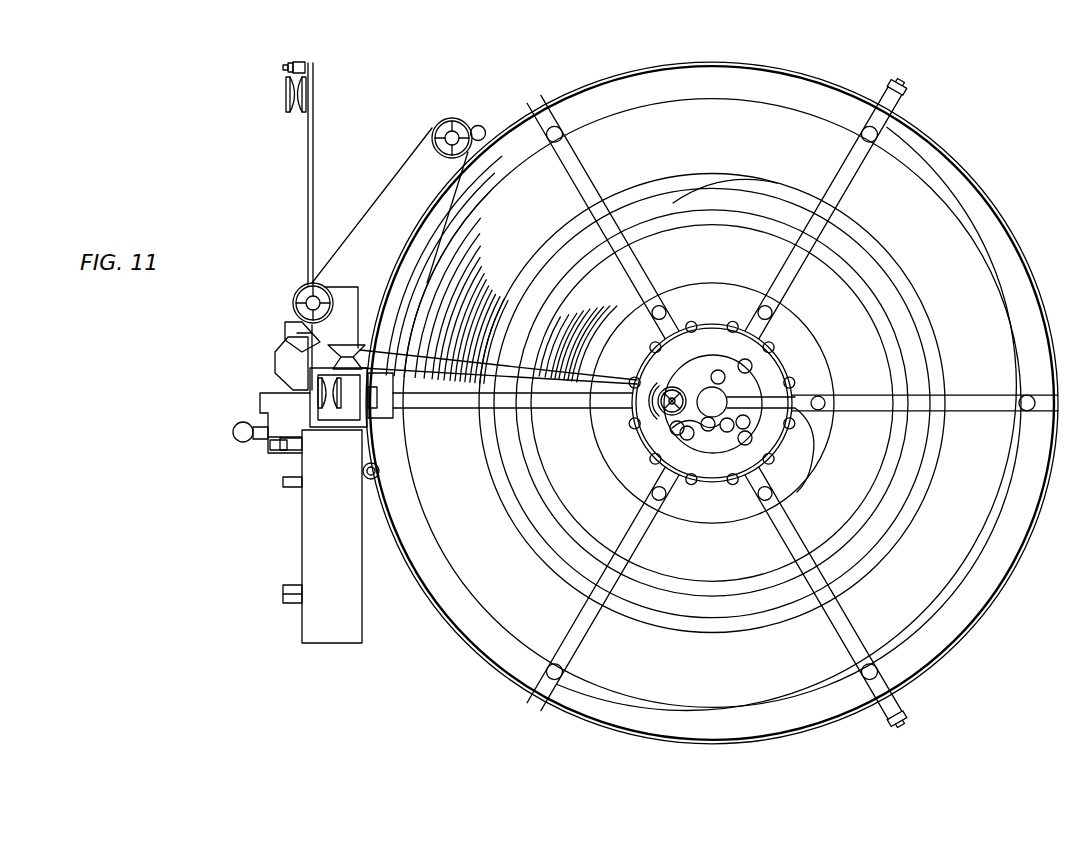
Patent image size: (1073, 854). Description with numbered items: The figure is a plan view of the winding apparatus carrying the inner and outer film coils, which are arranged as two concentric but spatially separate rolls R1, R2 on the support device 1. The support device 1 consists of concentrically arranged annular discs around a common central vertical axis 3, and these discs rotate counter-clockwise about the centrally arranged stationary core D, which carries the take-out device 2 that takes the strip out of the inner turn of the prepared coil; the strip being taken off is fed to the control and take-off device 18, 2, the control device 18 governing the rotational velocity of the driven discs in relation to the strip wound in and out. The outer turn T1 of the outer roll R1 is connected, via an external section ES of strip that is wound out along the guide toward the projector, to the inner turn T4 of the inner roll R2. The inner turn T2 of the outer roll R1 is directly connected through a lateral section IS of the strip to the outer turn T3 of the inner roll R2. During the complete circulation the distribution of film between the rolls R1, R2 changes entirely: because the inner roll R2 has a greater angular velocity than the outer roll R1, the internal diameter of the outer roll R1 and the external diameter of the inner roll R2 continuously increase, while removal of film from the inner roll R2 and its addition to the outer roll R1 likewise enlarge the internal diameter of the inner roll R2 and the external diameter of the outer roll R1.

The support device 1 is at (424, 673).
The take-out device 2 is at (653, 426).
The central vertical axis 3 is at (715, 400).
The control device 18 is at (748, 396).
The stationary core D is at (700, 358).
The outer turn of outer roll T1 is at (516, 165).
The inner turn of outer roll T2 is at (614, 196).
The outer turn of inner roll T3 is at (734, 223).
The inner turn of inner roll T4 is at (798, 325).
The lateral section of the strip IS is at (675, 200).
The external section of the strip ES is at (371, 200).
The outer roll R1 is at (450, 269).
The inner roll R2 is at (582, 331).